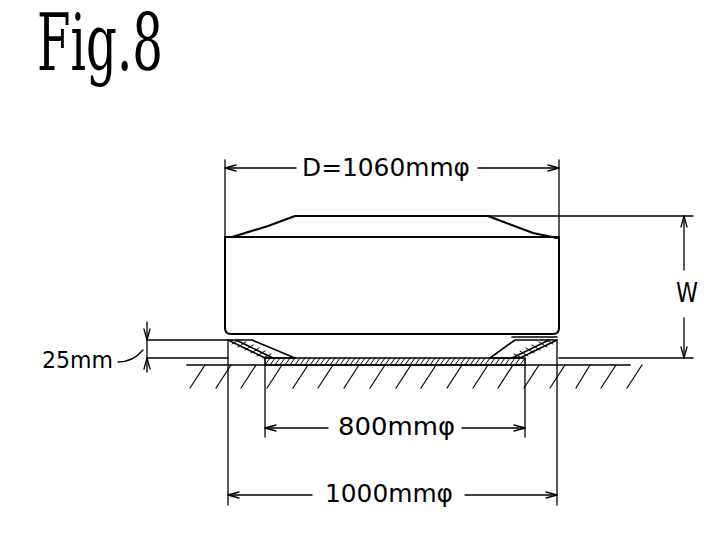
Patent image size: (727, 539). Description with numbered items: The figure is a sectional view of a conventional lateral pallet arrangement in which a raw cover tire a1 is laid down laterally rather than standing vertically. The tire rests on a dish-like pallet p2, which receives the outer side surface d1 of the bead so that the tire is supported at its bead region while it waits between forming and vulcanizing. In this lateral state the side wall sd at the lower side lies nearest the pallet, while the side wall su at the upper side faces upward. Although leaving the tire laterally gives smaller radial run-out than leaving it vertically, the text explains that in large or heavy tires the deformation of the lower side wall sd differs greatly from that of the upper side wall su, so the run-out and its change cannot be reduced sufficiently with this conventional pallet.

The side wall at the upper side su is at (277, 222).
The raw cover tire a1 is at (512, 203).
The dish-like pallet p2 is at (443, 358).
The outer side surface of the bead d1 is at (410, 366).
The side wall at the lower side sd is at (260, 372).